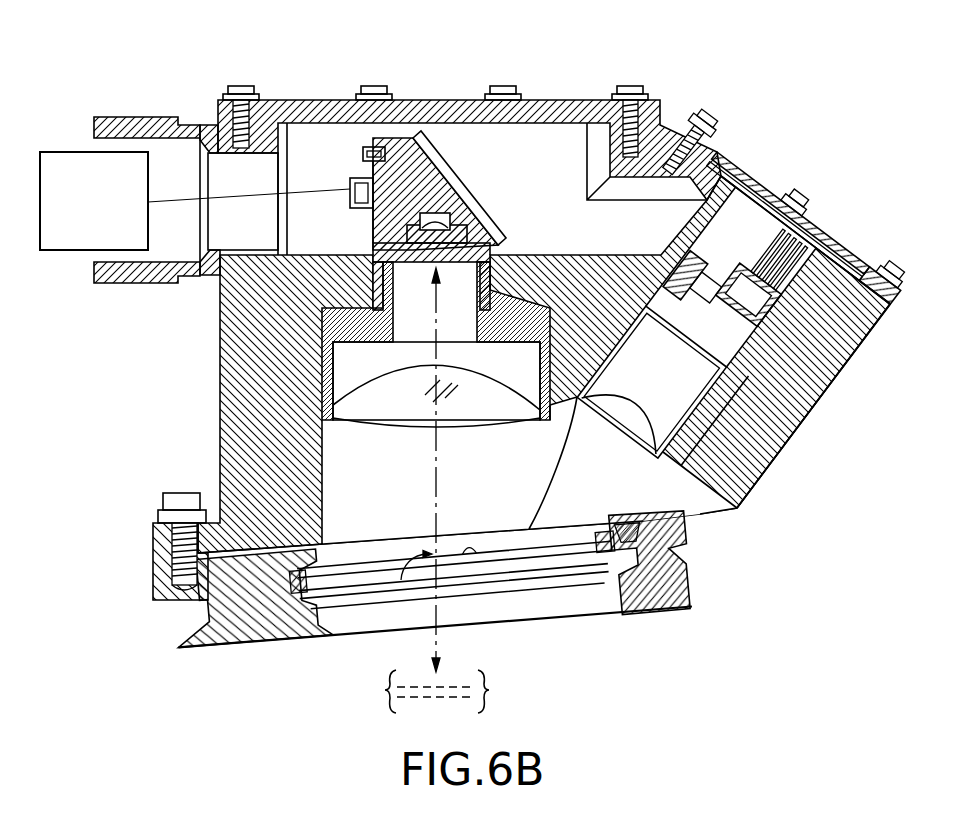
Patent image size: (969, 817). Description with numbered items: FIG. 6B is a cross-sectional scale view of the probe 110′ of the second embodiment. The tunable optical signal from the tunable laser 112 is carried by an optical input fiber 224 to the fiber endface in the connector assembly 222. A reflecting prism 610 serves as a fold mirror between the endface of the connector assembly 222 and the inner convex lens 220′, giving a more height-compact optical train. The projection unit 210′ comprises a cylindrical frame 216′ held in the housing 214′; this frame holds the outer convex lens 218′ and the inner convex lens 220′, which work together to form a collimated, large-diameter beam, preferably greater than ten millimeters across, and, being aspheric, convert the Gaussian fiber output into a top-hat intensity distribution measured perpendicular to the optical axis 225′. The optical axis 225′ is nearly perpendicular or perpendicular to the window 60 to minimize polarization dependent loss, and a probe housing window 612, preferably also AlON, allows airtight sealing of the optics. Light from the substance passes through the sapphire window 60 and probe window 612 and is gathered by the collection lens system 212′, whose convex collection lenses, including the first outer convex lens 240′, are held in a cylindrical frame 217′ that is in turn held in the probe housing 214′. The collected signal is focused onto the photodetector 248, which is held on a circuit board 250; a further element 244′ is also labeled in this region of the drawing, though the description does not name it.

The probe 110′ is at (152, 90).
The tunable laser 112 is at (94, 201).
The optical input fiber 224 is at (205, 200).
The connector assembly 222 is at (360, 186).
The reflecting prism 610 is at (427, 182).
The inner convex lens 220′ is at (443, 232).
The projection unit 210′ is at (314, 367).
The cylindrical frame 216′ is at (322, 385).
The outer convex lens 218′ is at (348, 420).
The optical axis 225′ is at (435, 458).
The probe housing 214′ is at (145, 540).
The probe housing window 612 is at (330, 603).
The sapphire window 60 is at (415, 686).
The photodetector 248 is at (727, 305).
The circuit board 250 is at (797, 280).
The photodetector 244′ is at (772, 383).
The first outer convex lens 240′ is at (664, 466).
The cylindrical frame 217′ is at (773, 457).
The collection lens system 212′ is at (757, 487).